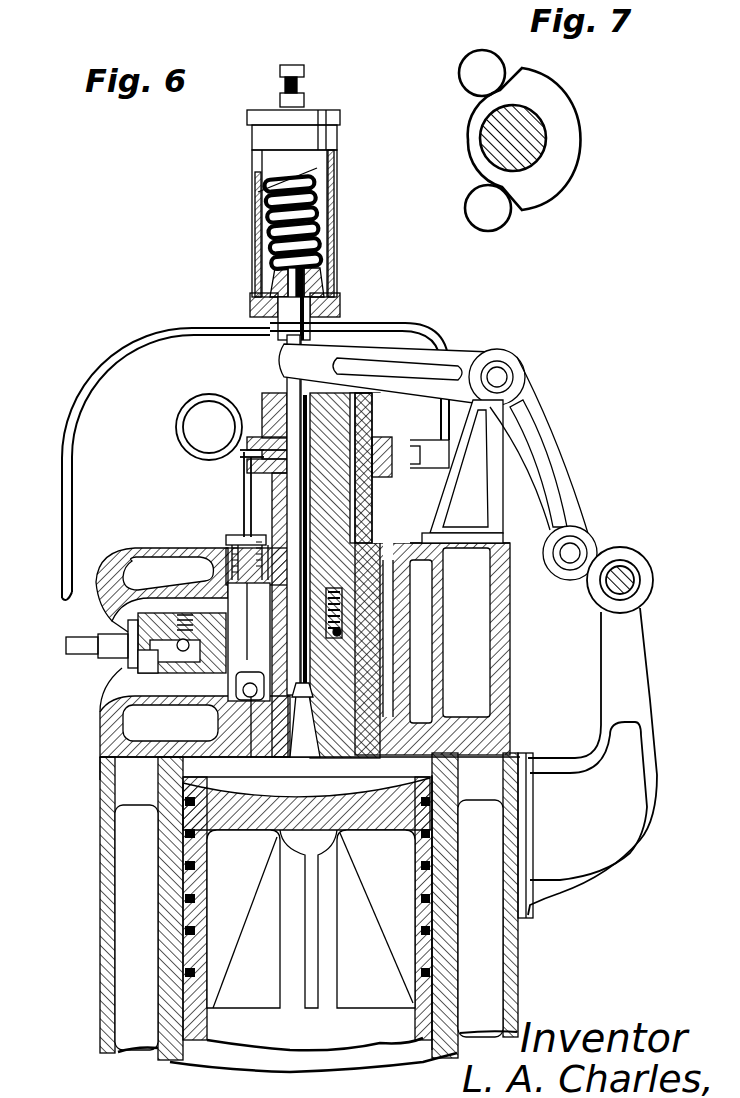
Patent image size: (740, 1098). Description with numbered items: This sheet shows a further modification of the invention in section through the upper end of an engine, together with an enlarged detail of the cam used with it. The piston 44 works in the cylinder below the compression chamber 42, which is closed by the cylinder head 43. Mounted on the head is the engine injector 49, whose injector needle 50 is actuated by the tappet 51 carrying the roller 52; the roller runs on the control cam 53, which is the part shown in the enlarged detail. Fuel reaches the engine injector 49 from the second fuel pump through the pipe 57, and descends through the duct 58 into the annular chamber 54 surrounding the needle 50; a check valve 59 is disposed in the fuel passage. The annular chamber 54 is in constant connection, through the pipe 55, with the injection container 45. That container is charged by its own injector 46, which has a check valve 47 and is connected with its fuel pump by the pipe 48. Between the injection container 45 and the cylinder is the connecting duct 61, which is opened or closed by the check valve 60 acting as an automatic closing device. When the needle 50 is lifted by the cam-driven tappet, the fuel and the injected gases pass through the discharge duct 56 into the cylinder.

In FIG. 6, the compression chamber 42 is at (462, 912).
In FIG. 6, the cylinder head 43 is at (337, 615).
In FIG. 6, the piston 44 is at (339, 913).
In FIG. 6, the injection container 45 is at (222, 594).
In FIG. 6, the injector 46 is at (90, 776).
In FIG. 6, the check valve 47 is at (140, 659).
In FIG. 6, the pipe 48 is at (102, 648).
In FIG. 6, the engine injector 49 is at (402, 349).
In FIG. 6, the injector needle 50 is at (246, 510).
In FIG. 6, the tappet 51 is at (359, 365).
In FIG. 6, the roller 52 is at (550, 576).
In FIG. 7, the roller 52 is at (458, 129).
In FIG. 6, the control cam 53 is at (598, 709).
In FIG. 7, the control cam 53 is at (547, 145).
In FIG. 6, the annular chamber 54 is at (397, 351).
In FIG. 6, the pipe 55 is at (240, 520).
In FIG. 6, the discharge duct 56 is at (313, 885).
In FIG. 6, the pipe 57 is at (166, 464).
In FIG. 6, the duct 58 is at (487, 450).
In FIG. 6, the check valve 59 is at (559, 517).
In FIG. 6, the check valve 60 is at (297, 912).
In FIG. 6, the connecting duct 61 is at (241, 766).